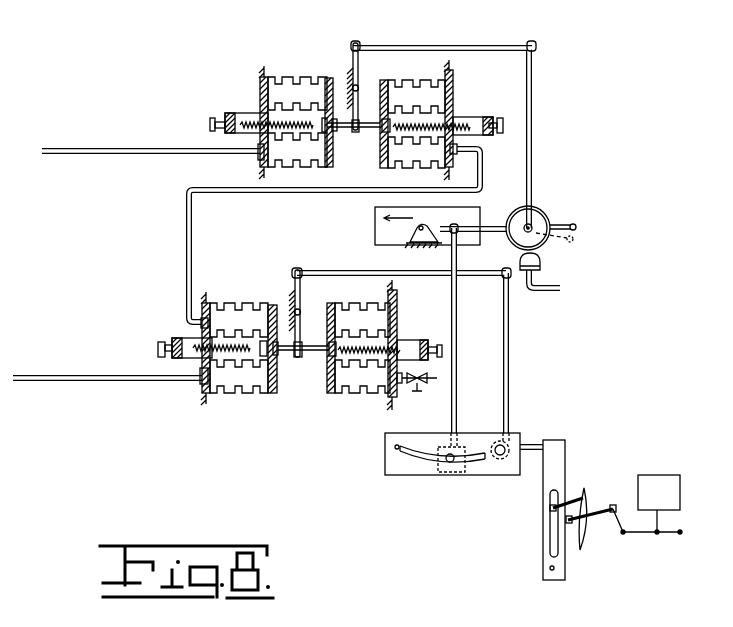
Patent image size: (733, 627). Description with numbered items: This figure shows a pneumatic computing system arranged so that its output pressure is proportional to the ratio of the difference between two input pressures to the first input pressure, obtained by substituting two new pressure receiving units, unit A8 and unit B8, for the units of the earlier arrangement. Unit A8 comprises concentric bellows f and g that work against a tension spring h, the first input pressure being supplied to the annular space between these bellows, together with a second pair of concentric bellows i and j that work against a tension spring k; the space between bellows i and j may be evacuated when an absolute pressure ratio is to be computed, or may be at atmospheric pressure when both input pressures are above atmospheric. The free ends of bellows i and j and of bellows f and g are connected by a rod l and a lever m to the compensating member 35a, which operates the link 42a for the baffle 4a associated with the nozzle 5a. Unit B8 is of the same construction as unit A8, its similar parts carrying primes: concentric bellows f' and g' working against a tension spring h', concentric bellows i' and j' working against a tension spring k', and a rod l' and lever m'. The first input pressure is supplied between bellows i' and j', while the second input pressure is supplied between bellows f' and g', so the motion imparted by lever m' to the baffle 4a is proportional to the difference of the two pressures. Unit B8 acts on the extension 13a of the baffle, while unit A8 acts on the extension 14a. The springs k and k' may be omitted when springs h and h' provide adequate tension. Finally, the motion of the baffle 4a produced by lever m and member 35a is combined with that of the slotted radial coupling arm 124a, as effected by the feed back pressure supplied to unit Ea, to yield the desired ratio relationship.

The pressure receiving unit B8 is at (306, 38).
The pressure receiving unit A8 is at (273, 289).
The outer bellows f' is at (297, 77).
The inner bellows g' is at (297, 110).
The tension spring h' is at (295, 116).
The outer bellows i' is at (416, 84).
The inner bellows j' is at (416, 111).
The tension spring k' is at (442, 114).
The rod l' is at (362, 111).
The lever m' is at (441, 85).
The baffle extension 14a is at (494, 222).
The baffle 4a is at (537, 215).
The baffle extension 13a is at (567, 224).
The nozzle 5a is at (541, 260).
The link 42a is at (457, 335).
The outer bellows f is at (231, 372).
The inner bellows g is at (239, 400).
The tension spring h is at (241, 346).
The outer bellows i is at (356, 368).
The inner bellows j is at (362, 398).
The tension spring k is at (385, 352).
The rod l is at (303, 335).
The lever m is at (310, 313).
The compensating member 35a is at (475, 476).
The slotted radial coupling arm 124a is at (566, 455).
The feed back unit Ea is at (670, 503).